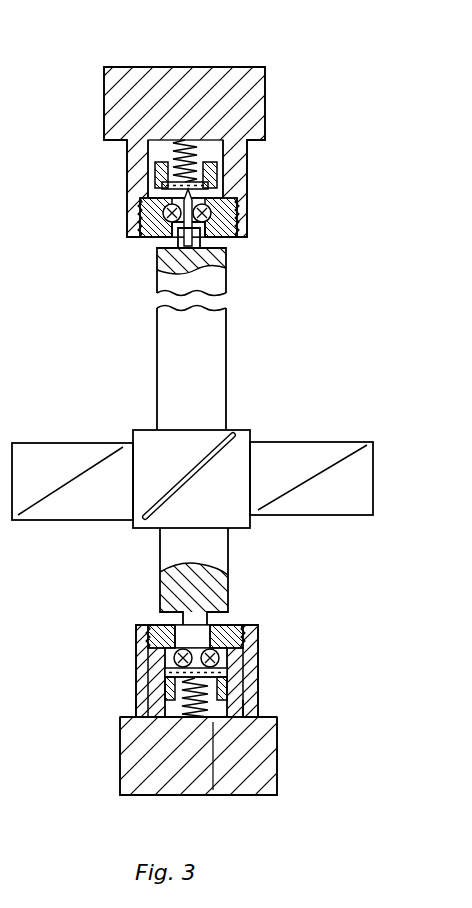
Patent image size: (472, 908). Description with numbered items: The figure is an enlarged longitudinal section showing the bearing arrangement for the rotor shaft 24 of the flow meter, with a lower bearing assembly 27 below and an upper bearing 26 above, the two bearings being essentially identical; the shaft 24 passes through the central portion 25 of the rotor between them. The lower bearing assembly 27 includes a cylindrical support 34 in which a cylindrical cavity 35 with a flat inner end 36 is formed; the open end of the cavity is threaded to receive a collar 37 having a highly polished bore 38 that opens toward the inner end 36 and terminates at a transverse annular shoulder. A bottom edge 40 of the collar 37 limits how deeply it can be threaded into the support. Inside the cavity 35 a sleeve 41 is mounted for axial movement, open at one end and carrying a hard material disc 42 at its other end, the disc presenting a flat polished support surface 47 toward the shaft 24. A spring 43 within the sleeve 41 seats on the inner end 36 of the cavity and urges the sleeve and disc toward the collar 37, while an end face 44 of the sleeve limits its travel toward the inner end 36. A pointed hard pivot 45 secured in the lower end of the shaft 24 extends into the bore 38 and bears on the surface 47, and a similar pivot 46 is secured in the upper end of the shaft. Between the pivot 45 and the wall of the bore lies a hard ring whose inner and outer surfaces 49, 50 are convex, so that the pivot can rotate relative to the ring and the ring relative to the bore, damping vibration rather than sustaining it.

The rotor shaft 24 is at (220, 383).
The handle 25 is at (303, 442).
The upper bearing 26 is at (266, 84).
The lower bearing assembly 27 is at (278, 776).
The cylindrical support 34 is at (252, 705).
The cylindrical cavity 35 is at (230, 722).
The flat inner end 36 is at (184, 700).
The collar 37 is at (252, 625).
The bore 38 is at (182, 630).
The bottom edge 40 is at (228, 673).
The sleeve 41 is at (168, 688).
The hard material disc 42 is at (166, 672).
The spring 43 is at (213, 770).
The end face 44 is at (140, 712).
The pivot 45 is at (222, 598).
The pivot 46 is at (198, 240).
The polished support surface 47 is at (176, 658).
The inner surface 49 is at (150, 638).
The outer surface 50 is at (224, 690).